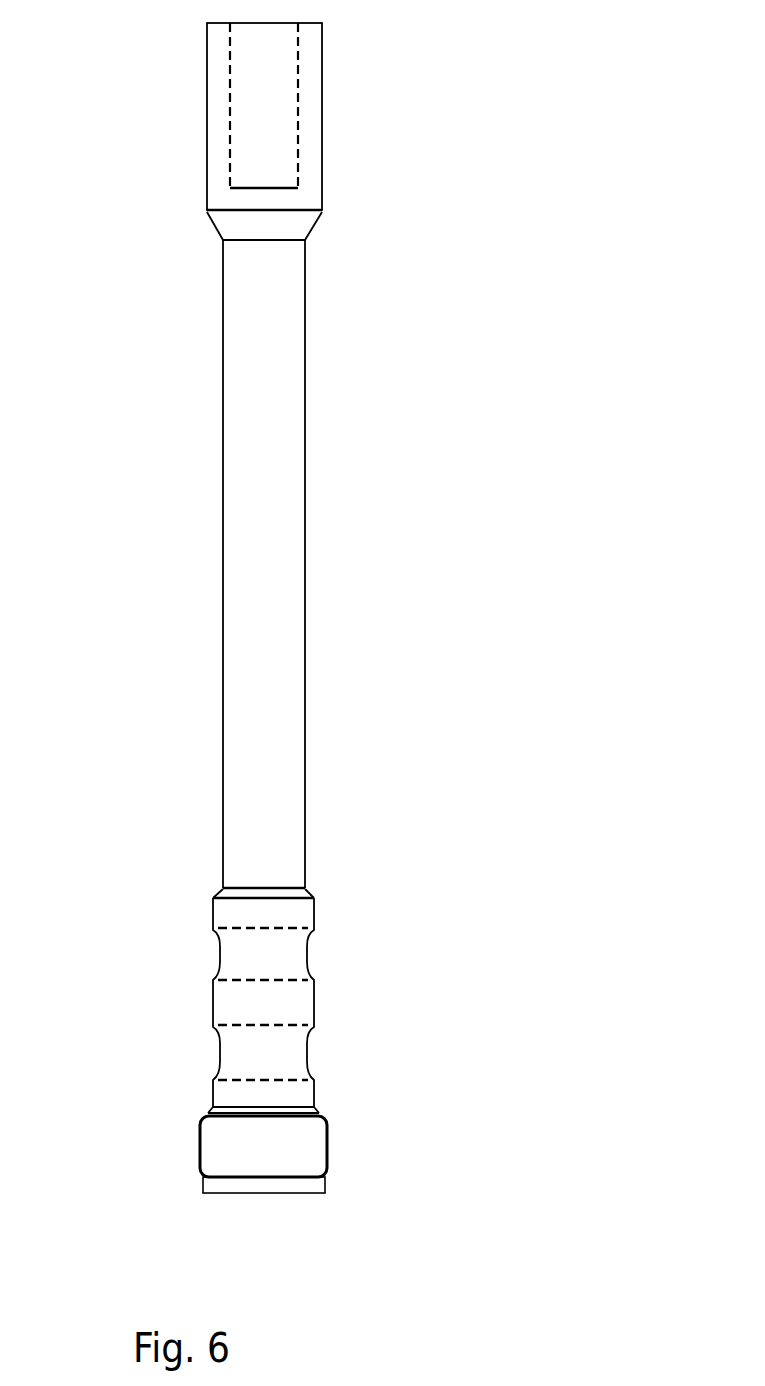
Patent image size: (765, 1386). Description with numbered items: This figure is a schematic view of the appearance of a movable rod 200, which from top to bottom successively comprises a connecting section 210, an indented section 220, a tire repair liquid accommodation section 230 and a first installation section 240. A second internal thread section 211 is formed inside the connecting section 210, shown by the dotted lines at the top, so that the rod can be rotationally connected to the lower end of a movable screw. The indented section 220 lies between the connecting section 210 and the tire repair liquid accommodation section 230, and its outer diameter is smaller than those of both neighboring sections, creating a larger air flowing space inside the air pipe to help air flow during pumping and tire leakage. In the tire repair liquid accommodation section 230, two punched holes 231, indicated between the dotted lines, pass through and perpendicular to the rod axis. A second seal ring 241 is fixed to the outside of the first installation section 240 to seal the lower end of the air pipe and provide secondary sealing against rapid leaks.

The movable rod 200 is at (563, 35).
The connecting section 210 is at (246, 131).
The second internal thread section 211 is at (297, 138).
The indented section 220 is at (182, 240).
The tire repair liquid accommodation section 230 is at (235, 999).
The punched hole 231 is at (273, 963).
The first installation section 240 is at (263, 1132).
The second seal ring 241 is at (328, 1152).